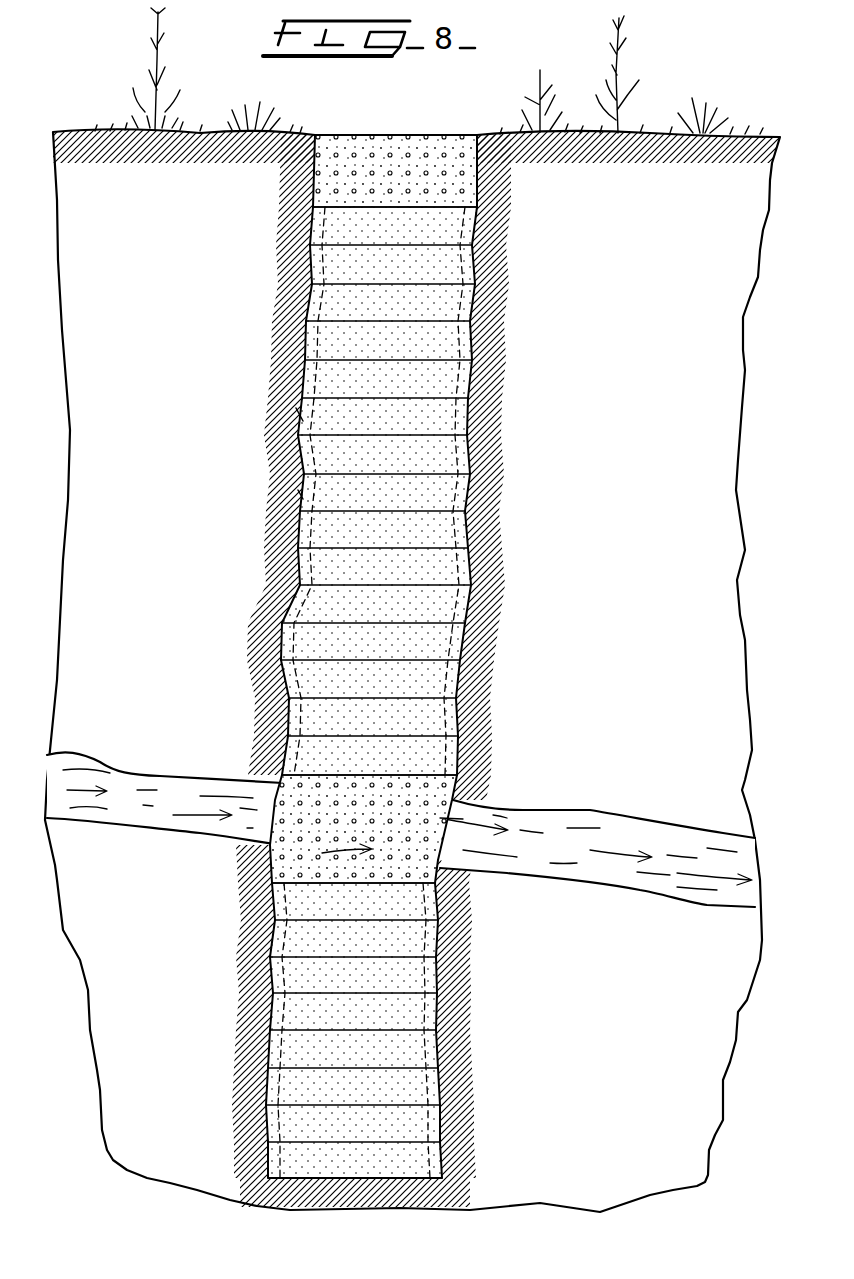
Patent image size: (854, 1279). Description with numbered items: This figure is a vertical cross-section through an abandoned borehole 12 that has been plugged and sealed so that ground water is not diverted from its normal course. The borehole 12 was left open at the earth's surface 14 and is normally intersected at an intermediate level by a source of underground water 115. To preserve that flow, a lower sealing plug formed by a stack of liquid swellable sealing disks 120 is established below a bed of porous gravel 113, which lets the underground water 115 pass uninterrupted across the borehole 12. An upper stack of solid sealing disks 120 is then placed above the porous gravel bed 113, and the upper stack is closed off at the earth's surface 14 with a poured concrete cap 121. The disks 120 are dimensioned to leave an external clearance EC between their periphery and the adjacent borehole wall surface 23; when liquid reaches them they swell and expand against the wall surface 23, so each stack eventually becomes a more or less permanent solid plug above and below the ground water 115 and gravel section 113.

The earth's surface 14 is at (78, 130).
The borehole 12 is at (307, 300).
The wall surface of the borehole 23 is at (303, 500).
The external clearance EC is at (303, 421).
The bed of porous gravel 113 is at (346, 831).
The underground water 115 is at (140, 793).
The liquid swellable sealing disk 120 is at (376, 234).
The poured concrete cap 121 is at (403, 165).